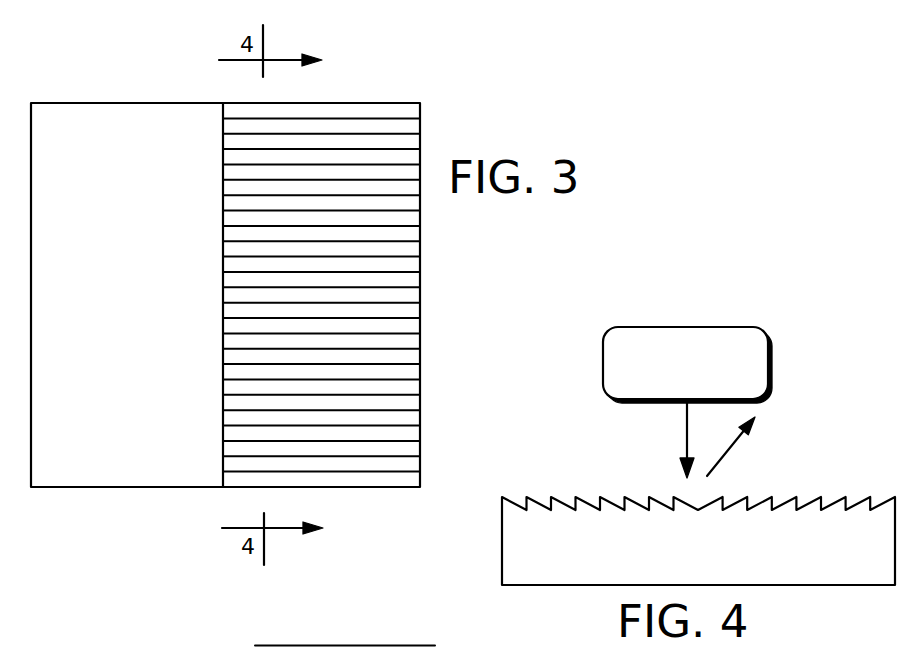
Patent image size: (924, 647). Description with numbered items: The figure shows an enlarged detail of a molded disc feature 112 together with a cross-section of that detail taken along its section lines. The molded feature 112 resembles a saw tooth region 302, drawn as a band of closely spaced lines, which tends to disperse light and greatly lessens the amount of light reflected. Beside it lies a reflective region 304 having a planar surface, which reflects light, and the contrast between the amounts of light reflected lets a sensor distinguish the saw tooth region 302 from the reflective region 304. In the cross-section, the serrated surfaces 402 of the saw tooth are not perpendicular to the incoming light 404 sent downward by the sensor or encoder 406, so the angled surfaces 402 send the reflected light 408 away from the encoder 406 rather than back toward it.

In FIG. 3, the molded feature 112 is at (420, 315).
In FIG. 3, the saw tooth region 302 is at (393, 125).
In FIG. 4, the saw tooth region 302 is at (797, 385).
In FIG. 3, the reflective region 304 is at (90, 158).
In FIG. 4, the surfaces of the saw tooth 402 is at (587, 497).
In FIG. 4, the incoming light 404 is at (687, 420).
In FIG. 4, the encoder 406 is at (669, 388).
In FIG. 4, the reflected light 408 is at (730, 450).